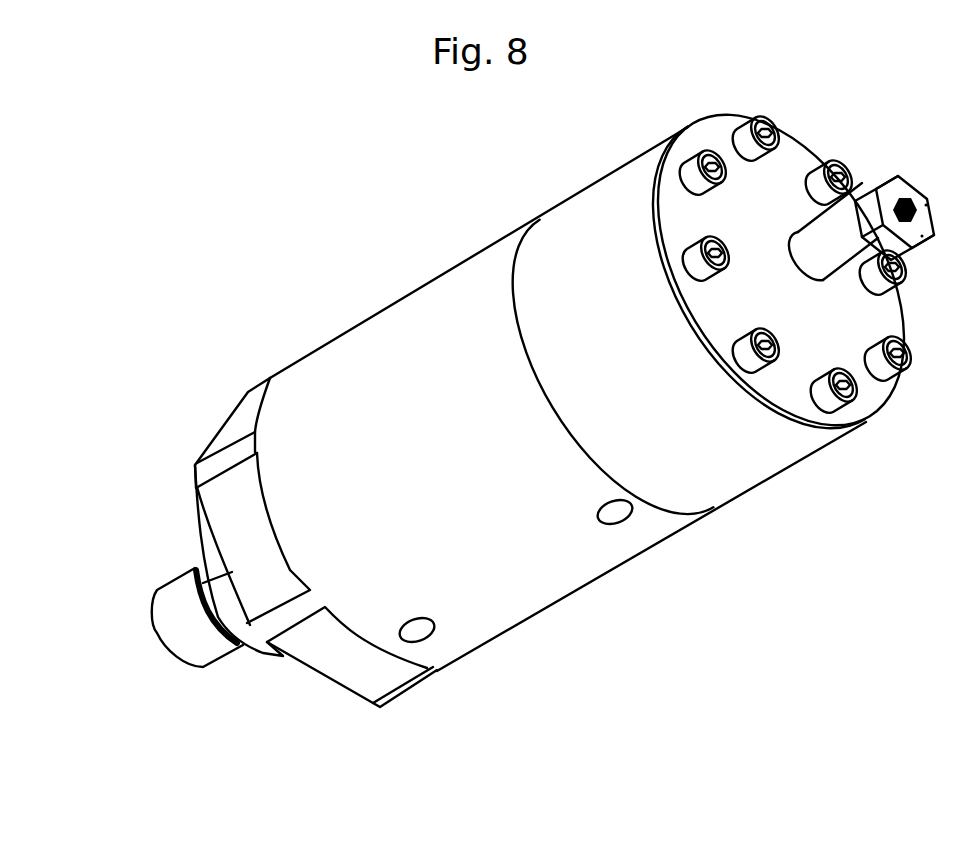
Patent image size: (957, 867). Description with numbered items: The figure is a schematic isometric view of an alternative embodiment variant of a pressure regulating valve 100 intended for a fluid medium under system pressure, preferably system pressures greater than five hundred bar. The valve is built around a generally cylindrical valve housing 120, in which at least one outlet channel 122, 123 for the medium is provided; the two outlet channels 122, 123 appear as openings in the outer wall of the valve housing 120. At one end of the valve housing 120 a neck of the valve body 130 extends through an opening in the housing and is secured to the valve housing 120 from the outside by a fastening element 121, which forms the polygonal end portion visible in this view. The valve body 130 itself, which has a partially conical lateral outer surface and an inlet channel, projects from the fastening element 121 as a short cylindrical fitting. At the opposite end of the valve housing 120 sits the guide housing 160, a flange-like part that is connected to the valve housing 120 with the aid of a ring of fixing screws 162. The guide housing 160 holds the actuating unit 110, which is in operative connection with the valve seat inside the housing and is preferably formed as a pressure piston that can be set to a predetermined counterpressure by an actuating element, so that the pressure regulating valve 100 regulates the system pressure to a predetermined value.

The pressure regulating valve 100 is at (152, 383).
The actuating unit 110 is at (840, 242).
The valve housing 120 is at (377, 307).
The fastening element 121 is at (252, 637).
The outlet channel 122 is at (615, 510).
The outlet channel 123 is at (413, 628).
The valve body 130 is at (206, 682).
The guide housing 160 is at (820, 463).
The fixing screws 162 is at (745, 140).